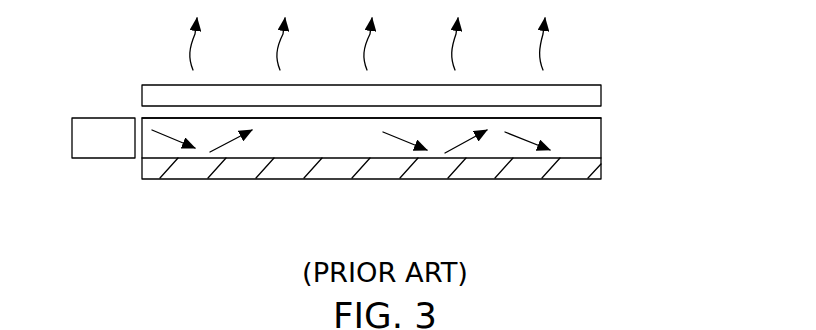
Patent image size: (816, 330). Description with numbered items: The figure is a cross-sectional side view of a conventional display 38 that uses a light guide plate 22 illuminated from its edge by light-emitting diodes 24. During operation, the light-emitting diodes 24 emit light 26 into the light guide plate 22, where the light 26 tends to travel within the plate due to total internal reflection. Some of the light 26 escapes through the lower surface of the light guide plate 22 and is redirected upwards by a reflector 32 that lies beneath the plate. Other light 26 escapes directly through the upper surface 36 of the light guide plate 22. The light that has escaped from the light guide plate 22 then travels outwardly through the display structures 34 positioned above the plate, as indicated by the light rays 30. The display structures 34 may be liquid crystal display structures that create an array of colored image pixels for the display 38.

The light guide plate 22 is at (601, 132).
The light-emitting diode 24 is at (93, 153).
The light 26 is at (169, 140).
The light rays 30 is at (188, 43).
The reflector 32 is at (280, 172).
The display structures 34 is at (601, 90).
The upper surface 36 is at (557, 118).
The conventional display 38 is at (661, 37).